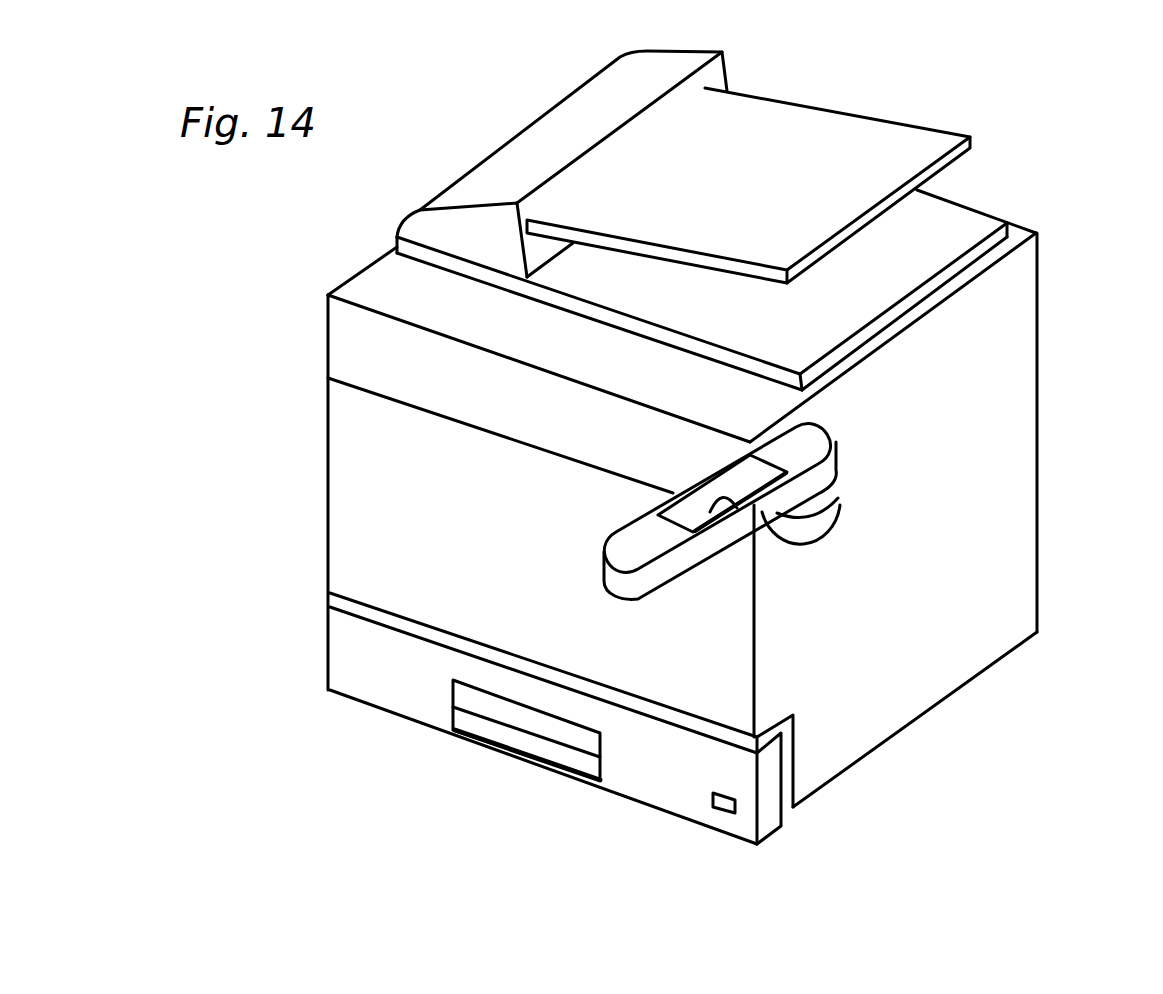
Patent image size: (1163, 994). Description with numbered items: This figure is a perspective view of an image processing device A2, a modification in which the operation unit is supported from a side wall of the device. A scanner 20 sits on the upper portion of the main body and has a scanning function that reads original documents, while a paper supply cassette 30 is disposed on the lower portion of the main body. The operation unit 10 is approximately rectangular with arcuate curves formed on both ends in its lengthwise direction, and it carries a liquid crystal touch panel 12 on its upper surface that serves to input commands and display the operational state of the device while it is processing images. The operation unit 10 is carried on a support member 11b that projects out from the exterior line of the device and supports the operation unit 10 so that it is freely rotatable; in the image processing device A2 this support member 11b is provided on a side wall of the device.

The scanner 20 is at (747, 184).
The image processing device A2 is at (1000, 178).
The operation unit 10 is at (627, 556).
The liquid crystal touch panel 12 is at (736, 508).
The support member 11b is at (824, 540).
The paper supply cassette 30 is at (738, 790).